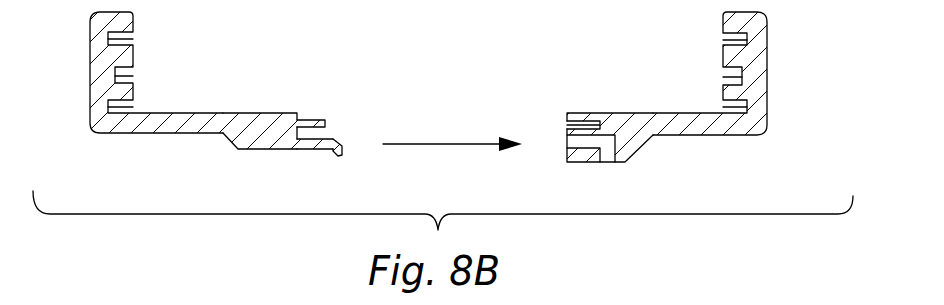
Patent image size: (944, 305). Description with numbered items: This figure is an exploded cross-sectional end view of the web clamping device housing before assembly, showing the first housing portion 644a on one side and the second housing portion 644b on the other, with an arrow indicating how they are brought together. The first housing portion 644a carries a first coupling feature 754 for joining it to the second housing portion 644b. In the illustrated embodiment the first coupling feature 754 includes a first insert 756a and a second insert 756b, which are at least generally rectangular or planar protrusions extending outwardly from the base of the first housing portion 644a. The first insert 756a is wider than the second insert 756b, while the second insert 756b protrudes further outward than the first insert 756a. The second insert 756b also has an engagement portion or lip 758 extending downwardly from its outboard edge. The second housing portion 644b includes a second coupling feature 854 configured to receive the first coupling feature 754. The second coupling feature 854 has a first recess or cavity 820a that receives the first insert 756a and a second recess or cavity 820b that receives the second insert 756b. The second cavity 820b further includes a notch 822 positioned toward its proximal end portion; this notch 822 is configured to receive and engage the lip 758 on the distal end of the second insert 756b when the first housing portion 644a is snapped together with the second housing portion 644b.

The first housing portion 644a is at (116, 134).
The second housing portion 644b is at (717, 136).
The first coupling feature 754 is at (328, 114).
The first insert 756a is at (327, 121).
The second insert 756b is at (343, 144).
The lip 758 is at (339, 156).
The second coupling feature 854 is at (572, 119).
The first recess or cavity 820a is at (567, 121).
The second recess or cavity 820b is at (567, 143).
The notch 822 is at (608, 163).